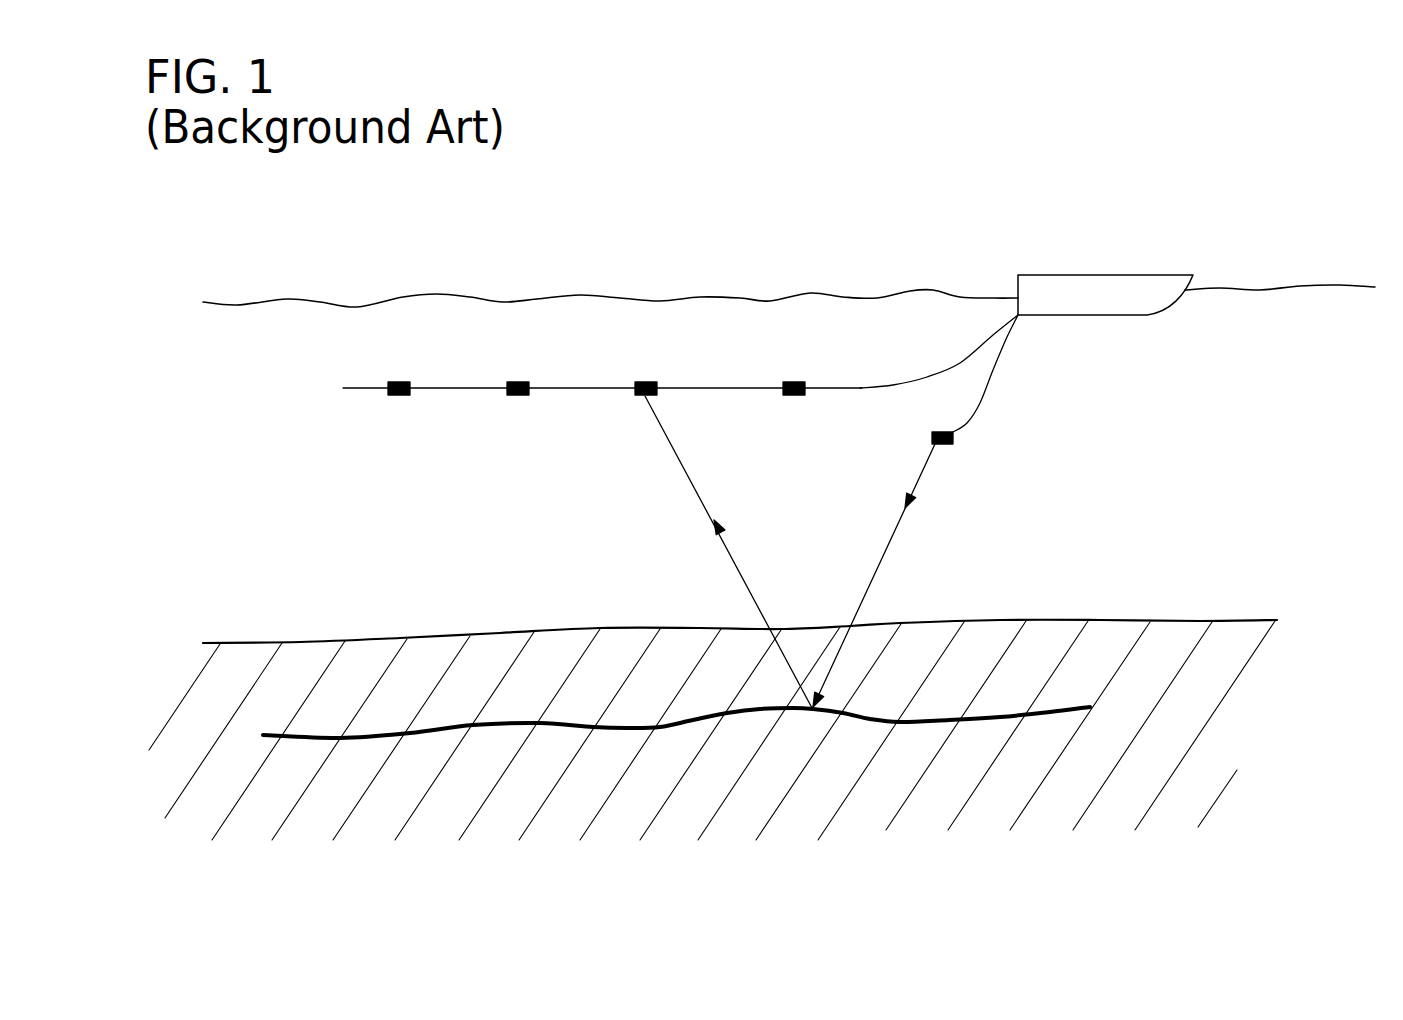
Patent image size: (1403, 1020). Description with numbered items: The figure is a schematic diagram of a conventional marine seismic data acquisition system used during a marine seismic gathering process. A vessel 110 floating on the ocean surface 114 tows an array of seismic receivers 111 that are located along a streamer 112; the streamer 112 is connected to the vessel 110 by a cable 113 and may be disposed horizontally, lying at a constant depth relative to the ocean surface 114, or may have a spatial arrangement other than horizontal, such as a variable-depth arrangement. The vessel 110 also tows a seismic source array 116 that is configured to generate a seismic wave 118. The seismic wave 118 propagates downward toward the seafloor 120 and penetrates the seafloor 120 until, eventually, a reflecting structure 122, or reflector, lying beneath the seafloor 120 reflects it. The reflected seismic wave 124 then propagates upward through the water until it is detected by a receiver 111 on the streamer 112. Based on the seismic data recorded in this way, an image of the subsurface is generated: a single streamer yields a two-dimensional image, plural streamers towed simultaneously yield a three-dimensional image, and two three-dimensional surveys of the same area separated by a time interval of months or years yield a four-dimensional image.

The vessel 110 is at (1185, 214).
The seismic receivers 111 is at (398, 396).
The streamers 112 is at (710, 390).
The cable 113 is at (957, 362).
The ocean surface 114 is at (256, 302).
The seismic source array 116 is at (943, 444).
The seismic wave 118 is at (882, 557).
The seafloor 120 is at (1103, 620).
The reflecting structure 122 is at (949, 720).
The reflected seismic wave 124 is at (685, 471).